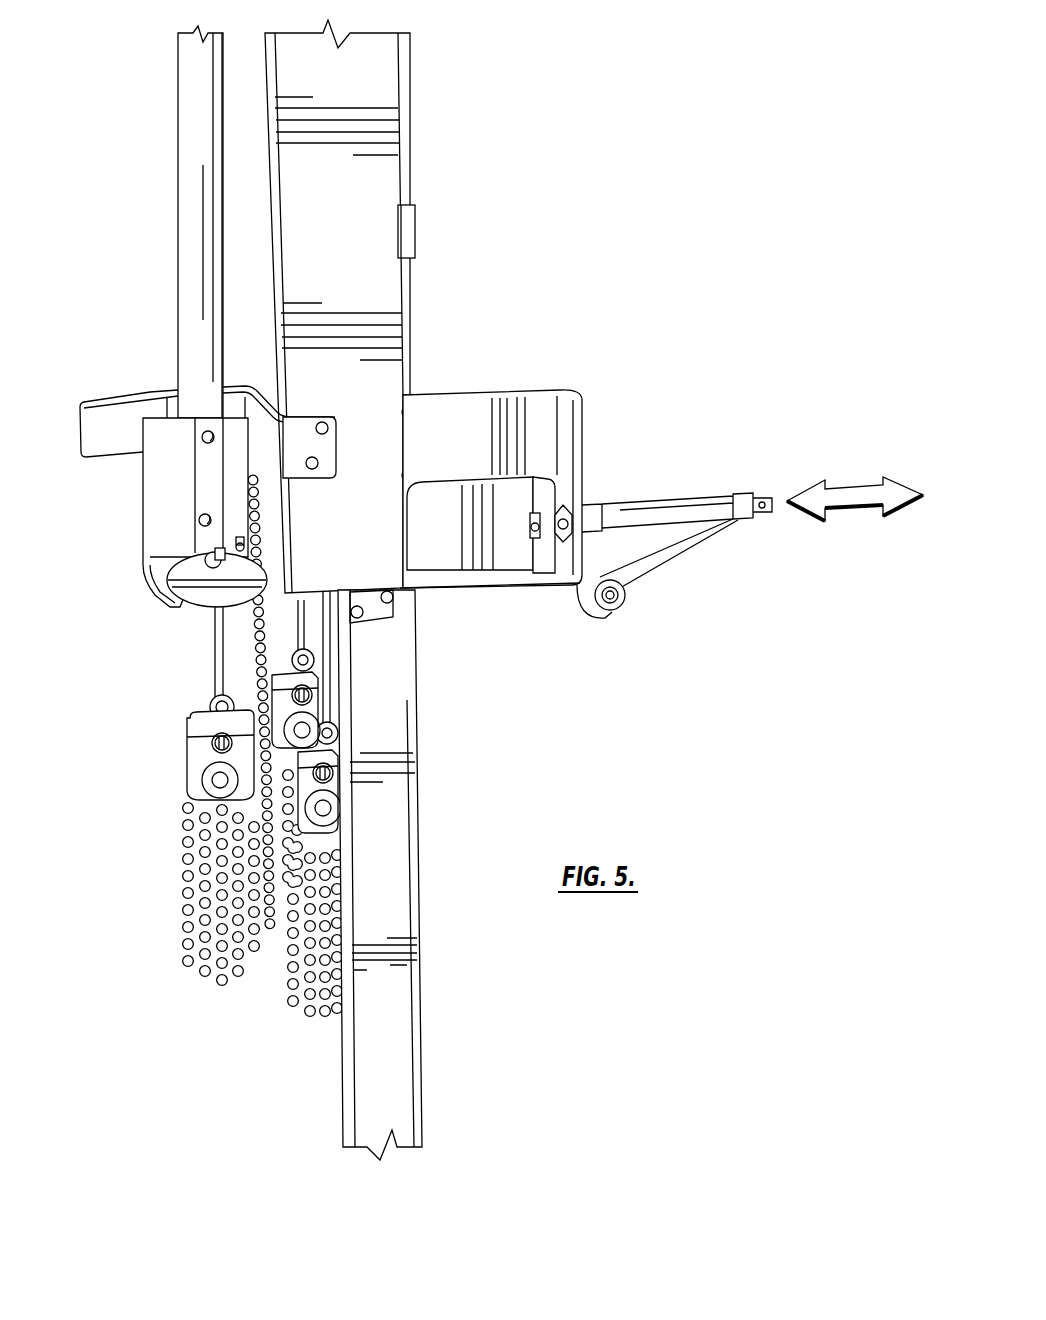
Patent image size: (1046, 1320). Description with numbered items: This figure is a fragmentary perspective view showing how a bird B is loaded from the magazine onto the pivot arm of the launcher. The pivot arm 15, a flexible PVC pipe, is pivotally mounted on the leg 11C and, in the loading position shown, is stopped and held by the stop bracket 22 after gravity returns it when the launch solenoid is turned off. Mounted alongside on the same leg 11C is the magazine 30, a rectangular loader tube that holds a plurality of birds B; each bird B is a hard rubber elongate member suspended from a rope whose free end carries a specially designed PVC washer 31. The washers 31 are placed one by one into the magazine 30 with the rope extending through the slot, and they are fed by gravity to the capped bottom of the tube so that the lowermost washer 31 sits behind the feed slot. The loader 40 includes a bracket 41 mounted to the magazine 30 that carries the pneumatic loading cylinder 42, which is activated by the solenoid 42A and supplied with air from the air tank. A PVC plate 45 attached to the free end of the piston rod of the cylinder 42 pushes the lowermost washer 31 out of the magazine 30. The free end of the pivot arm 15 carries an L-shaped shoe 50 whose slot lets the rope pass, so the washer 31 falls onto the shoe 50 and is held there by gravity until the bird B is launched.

The pivot arm 15 is at (185, 342).
The stop bracket 22 is at (102, 433).
The magazine 30 is at (365, 193).
The PVC washer 31 is at (172, 580).
The loader 40 is at (586, 484).
The bracket 41 is at (458, 407).
The pneumatic loading cylinder 42 is at (665, 505).
The solenoid 42A is at (603, 617).
The PVC plate 45 is at (512, 550).
The L-shaped shoe 50 is at (157, 512).
The leg 11C is at (400, 1027).
The bird B is at (315, 1017).